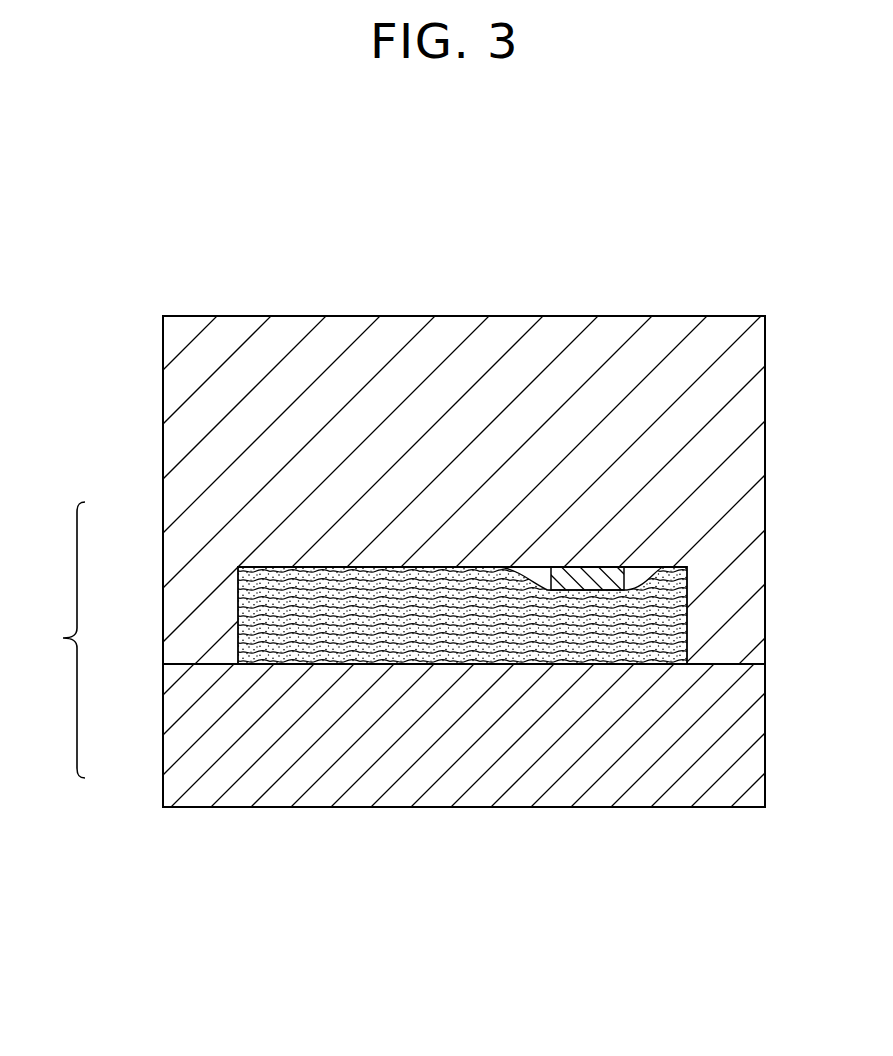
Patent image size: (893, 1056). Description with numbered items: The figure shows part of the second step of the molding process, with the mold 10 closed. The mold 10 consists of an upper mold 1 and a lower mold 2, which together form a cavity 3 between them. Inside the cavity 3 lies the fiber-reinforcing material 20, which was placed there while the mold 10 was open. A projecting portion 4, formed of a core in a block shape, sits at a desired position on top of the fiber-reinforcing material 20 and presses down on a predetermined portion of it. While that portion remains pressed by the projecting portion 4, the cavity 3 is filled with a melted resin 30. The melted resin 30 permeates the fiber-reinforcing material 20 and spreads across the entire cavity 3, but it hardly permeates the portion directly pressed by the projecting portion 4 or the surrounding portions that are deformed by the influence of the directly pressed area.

The upper mold 1 is at (192, 518).
The lower mold 2 is at (192, 757).
The cavity 3 is at (376, 572).
The projecting portion 4 is at (587, 578).
The mold 10 is at (57, 640).
The fiber-reinforcing material 20 is at (602, 617).
The melted resin 30 is at (380, 605).